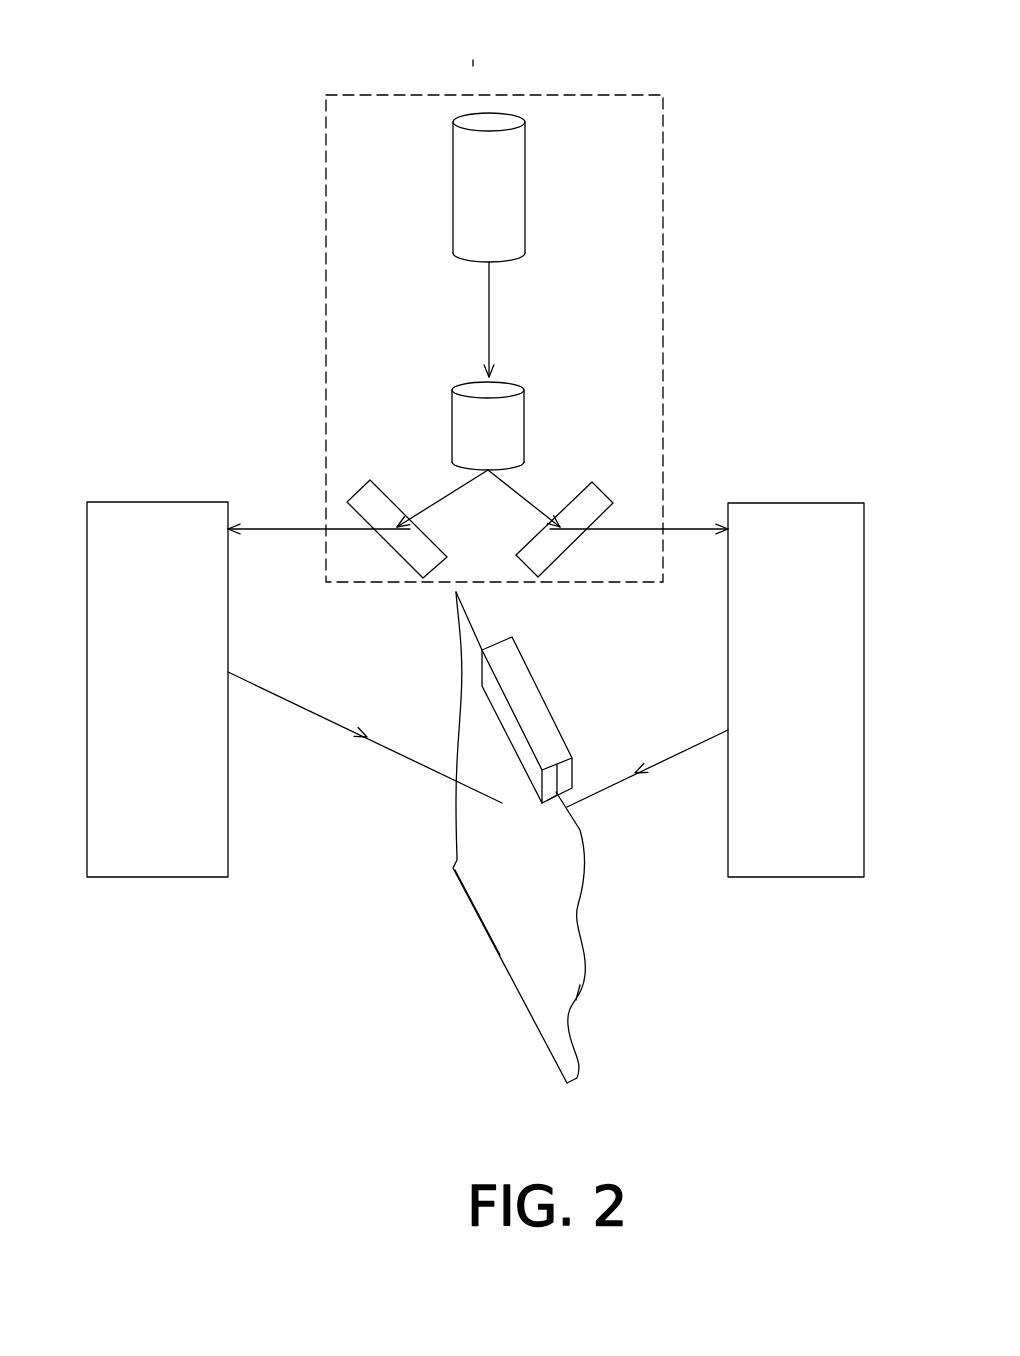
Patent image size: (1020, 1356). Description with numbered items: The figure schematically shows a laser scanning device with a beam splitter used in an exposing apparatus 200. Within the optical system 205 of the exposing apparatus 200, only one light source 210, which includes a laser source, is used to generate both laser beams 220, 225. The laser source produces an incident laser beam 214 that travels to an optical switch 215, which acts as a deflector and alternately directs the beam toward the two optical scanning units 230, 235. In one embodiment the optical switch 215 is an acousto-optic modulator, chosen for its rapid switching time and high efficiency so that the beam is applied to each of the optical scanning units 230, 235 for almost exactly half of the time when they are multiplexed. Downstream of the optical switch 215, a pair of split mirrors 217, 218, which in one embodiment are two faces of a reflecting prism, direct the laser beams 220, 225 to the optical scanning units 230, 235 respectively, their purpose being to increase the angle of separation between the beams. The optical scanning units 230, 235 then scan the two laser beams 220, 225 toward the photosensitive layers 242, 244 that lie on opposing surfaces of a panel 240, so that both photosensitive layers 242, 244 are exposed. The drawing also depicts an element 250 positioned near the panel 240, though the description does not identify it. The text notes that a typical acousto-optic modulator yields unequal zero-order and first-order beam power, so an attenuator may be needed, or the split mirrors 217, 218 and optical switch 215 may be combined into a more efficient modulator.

The exposing apparatus 200 is at (473, 68).
The optical system 205 is at (663, 235).
The light source 210 is at (525, 148).
The incident laser beam 214 is at (489, 297).
The optical switch 215 is at (453, 390).
The split mirror 217 is at (367, 487).
The split mirror 218 is at (573, 493).
The laser beam 220 is at (280, 529).
The laser beam 225 is at (688, 529).
The optical scanning unit 230 is at (125, 502).
The optical scanning unit 235 is at (760, 503).
The panel 240 is at (470, 685).
The photosensitive layer 242 is at (550, 1008).
The photosensitive layer 244 is at (580, 1027).
The calibration cuvette 250 is at (527, 687).